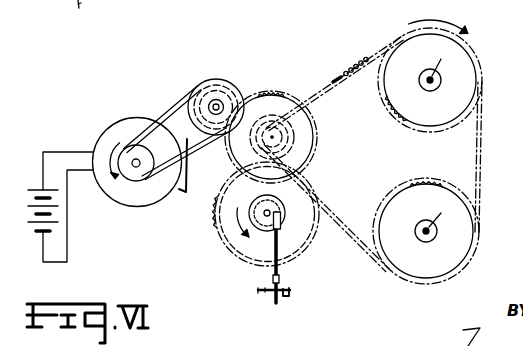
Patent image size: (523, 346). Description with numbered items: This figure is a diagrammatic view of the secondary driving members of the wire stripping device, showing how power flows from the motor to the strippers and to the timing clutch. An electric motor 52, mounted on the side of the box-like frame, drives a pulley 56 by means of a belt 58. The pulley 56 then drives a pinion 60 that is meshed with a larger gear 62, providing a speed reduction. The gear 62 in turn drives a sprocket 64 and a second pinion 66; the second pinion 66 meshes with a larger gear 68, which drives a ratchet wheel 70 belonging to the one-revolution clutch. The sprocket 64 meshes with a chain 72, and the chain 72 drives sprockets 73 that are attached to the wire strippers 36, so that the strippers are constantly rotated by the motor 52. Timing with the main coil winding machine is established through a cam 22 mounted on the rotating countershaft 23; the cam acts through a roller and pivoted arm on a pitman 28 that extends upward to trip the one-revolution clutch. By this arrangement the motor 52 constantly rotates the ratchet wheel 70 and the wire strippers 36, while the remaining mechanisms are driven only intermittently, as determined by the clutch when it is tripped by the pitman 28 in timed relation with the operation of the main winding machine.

The cam 22 is at (271, 299).
The rotating countershaft 23 is at (285, 298).
The pitman 28 is at (282, 276).
The wire strippers 36 is at (441, 117).
The electric motor 52 is at (168, 201).
The pulley 56 is at (222, 79).
The belt 58 is at (180, 100).
The pinion 60 is at (239, 82).
The gear 62 is at (275, 93).
The sprocket 64 is at (290, 126).
The second pinion 66 is at (282, 143).
The gear 68 is at (313, 233).
The ratchet wheel 70 is at (263, 232).
The chain 72 is at (348, 74).
The sprockets 73 is at (484, 79).